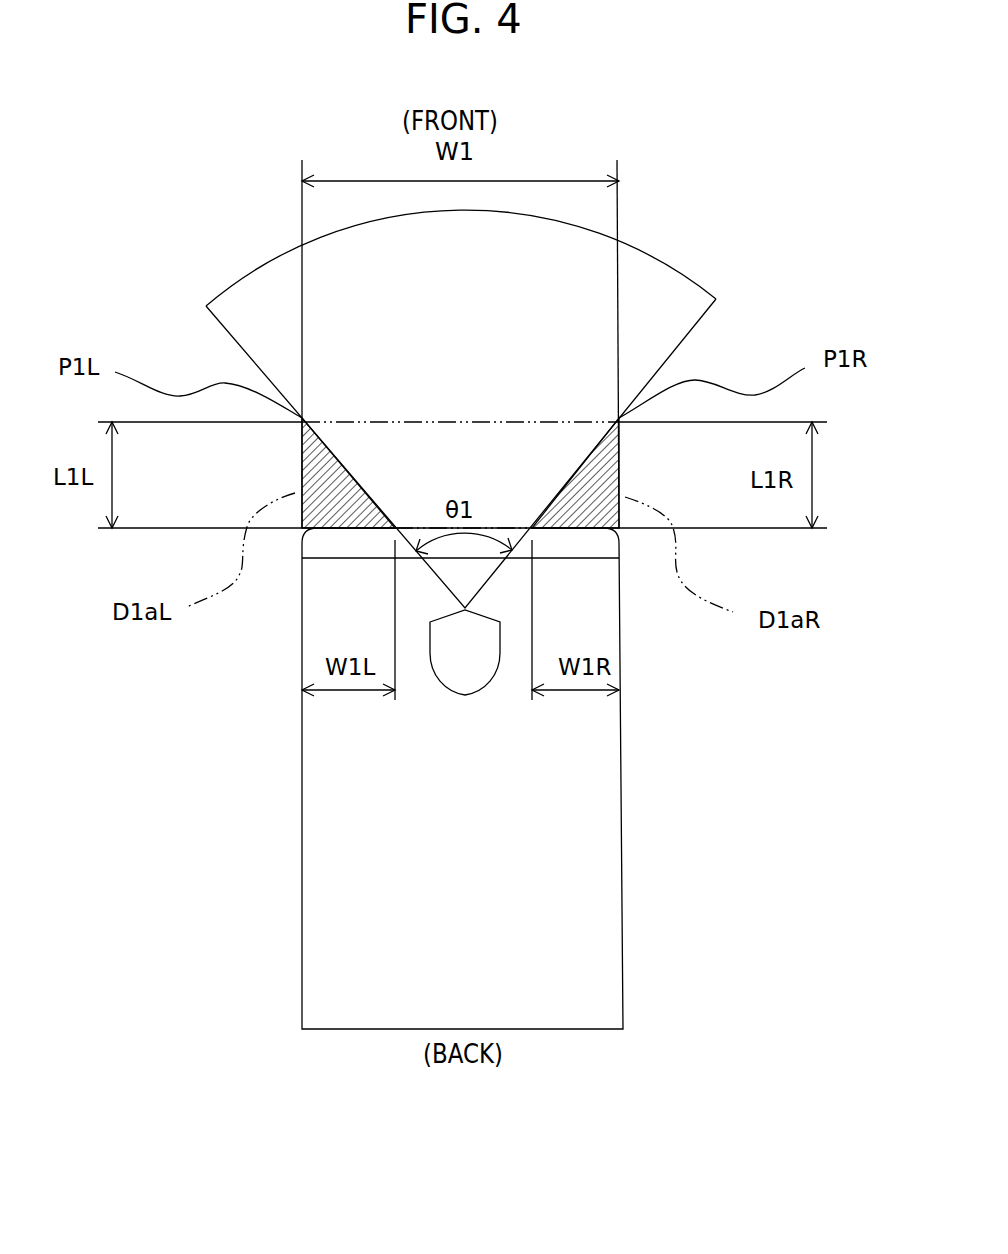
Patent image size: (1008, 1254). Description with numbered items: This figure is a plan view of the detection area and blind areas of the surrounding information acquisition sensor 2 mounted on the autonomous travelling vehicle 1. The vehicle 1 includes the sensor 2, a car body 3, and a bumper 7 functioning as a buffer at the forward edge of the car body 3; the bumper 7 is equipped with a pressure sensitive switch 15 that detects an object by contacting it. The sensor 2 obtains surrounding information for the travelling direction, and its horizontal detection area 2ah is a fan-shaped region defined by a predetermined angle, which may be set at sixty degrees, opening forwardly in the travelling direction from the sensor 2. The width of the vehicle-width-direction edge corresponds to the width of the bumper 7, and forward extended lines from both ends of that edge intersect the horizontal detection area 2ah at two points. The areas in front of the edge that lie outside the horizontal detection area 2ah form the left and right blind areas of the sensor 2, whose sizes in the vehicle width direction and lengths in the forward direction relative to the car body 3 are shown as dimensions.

The autonomous travelling vehicle 1 is at (377, 778).
The surrounding information acquisition sensor 2 is at (472, 680).
The horizontal detection area 2ah is at (642, 302).
The car body 3 is at (278, 911).
The bumper 7 is at (376, 618).
The pressure sensitive switch 15 is at (320, 545).